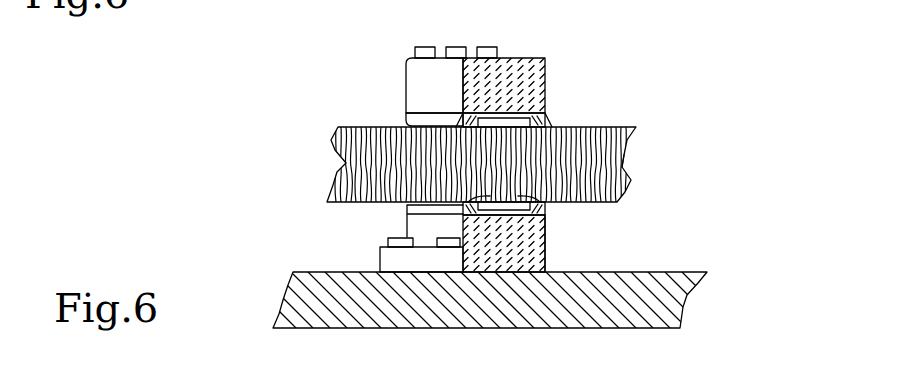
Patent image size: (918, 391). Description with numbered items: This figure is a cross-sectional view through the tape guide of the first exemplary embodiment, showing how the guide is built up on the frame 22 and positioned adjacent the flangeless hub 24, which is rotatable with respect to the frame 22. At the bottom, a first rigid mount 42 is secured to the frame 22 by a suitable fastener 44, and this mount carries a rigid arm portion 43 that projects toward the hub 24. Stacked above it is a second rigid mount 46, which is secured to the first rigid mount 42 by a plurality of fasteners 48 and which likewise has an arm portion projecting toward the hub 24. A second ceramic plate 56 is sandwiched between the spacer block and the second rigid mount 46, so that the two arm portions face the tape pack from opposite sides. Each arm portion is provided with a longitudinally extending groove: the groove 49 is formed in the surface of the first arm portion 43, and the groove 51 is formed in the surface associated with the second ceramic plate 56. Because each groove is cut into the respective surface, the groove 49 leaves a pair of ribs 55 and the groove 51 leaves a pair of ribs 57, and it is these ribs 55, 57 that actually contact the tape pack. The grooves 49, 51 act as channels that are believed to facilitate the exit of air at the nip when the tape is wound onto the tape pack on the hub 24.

The frame 22 is at (640, 306).
The flangeless hub 24 is at (587, 128).
The first rigid mount 42 is at (527, 260).
The rigid arm portion 43 is at (547, 232).
The fastener 44 is at (437, 238).
The second rigid mount 46 is at (433, 82).
The fasteners 48 is at (456, 47).
The groove 49 is at (633, 170).
The groove 51 is at (545, 66).
The ribs 55 is at (467, 201).
The second ceramic plate 56 is at (527, 143).
The ribs 57 is at (547, 124).